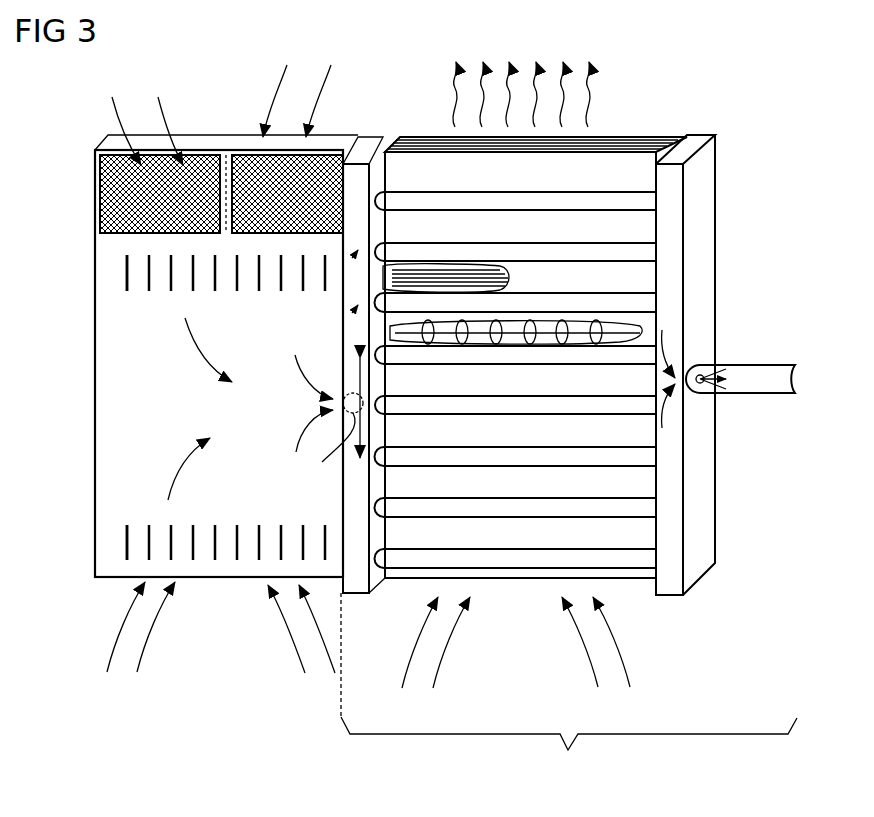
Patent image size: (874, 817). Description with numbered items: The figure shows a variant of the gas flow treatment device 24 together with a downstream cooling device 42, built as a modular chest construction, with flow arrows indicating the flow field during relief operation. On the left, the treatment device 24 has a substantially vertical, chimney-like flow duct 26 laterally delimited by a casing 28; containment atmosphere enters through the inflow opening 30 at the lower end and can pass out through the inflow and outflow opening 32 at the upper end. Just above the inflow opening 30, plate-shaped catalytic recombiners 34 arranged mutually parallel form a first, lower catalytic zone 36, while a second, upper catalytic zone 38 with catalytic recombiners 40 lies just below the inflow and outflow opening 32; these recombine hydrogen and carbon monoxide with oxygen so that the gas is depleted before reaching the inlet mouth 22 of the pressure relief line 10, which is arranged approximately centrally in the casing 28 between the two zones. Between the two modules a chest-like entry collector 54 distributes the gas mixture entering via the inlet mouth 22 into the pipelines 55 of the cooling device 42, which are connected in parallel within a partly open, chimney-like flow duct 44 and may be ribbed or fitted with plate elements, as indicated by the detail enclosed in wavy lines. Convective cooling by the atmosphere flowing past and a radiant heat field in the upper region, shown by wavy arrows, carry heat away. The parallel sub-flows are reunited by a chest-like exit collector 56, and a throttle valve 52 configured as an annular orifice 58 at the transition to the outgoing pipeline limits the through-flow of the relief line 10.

The pressure relief line 10 is at (569, 688).
The inlet mouth 22 is at (350, 418).
The gas flow treatment device 24 is at (94, 370).
The flow duct 26 is at (115, 414).
The casing 28 is at (95, 200).
The inflow opening 30 is at (220, 580).
The inflow and outflow opening 32 is at (202, 167).
The catalytic recombiners 34 is at (126, 549).
The first catalytic zone 36 is at (122, 533).
The second catalytic zone 38 is at (122, 266).
The catalytic recombiners 40 is at (126, 283).
The cooling device 42 is at (627, 480).
The flow duct 44 is at (625, 167).
The throttle valve 52 is at (703, 362).
The entry collector 54 is at (378, 140).
The pipelines 55 is at (645, 201).
The exit collector 56 is at (698, 140).
The annular orifice 58 is at (700, 385).